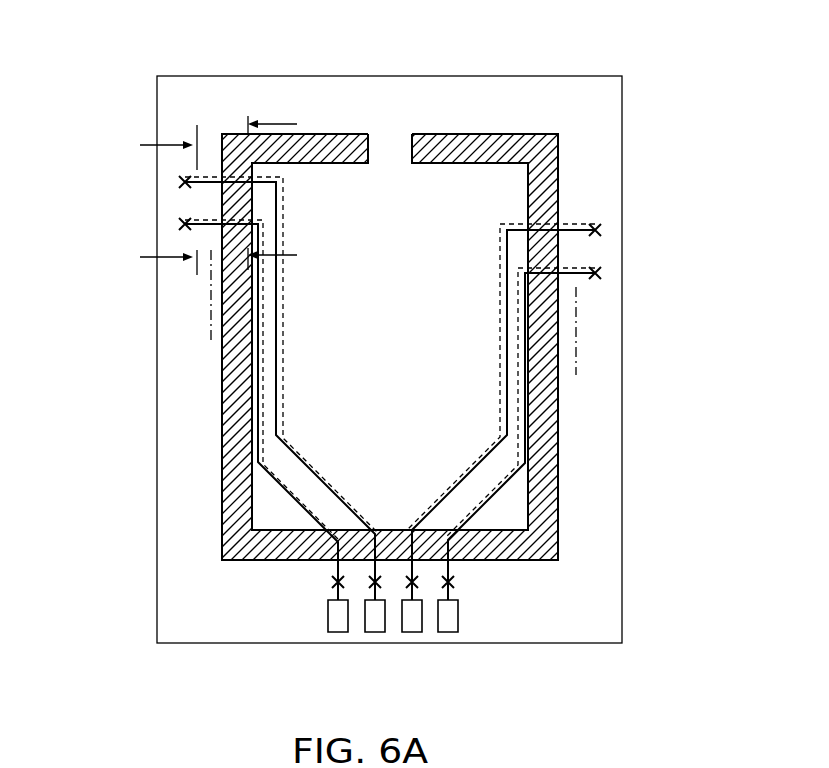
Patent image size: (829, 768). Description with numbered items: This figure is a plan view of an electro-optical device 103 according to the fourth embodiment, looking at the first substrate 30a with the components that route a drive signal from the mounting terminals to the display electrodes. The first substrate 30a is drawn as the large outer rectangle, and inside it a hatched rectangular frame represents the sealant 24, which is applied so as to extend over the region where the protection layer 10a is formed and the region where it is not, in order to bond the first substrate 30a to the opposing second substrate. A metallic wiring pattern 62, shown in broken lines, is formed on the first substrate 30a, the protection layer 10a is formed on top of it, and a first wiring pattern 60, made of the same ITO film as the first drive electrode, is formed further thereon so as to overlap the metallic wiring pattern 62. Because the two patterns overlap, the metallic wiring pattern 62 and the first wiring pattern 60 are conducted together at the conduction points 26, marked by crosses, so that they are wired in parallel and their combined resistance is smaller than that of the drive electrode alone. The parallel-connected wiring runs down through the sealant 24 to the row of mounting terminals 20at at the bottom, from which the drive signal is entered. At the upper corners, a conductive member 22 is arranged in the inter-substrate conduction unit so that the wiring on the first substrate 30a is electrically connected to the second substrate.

The electro-optical device 103 is at (124, 83).
The sealant 24 is at (230, 134).
The protection layer 10a is at (395, 178).
The first substrate 30a is at (602, 95).
The conduction points 26 is at (185, 224).
The conductive member 22 is at (250, 228).
The metallic wiring pattern 62 is at (283, 330).
The first wiring pattern 60 is at (290, 494).
The mounting terminal 20at is at (338, 632).